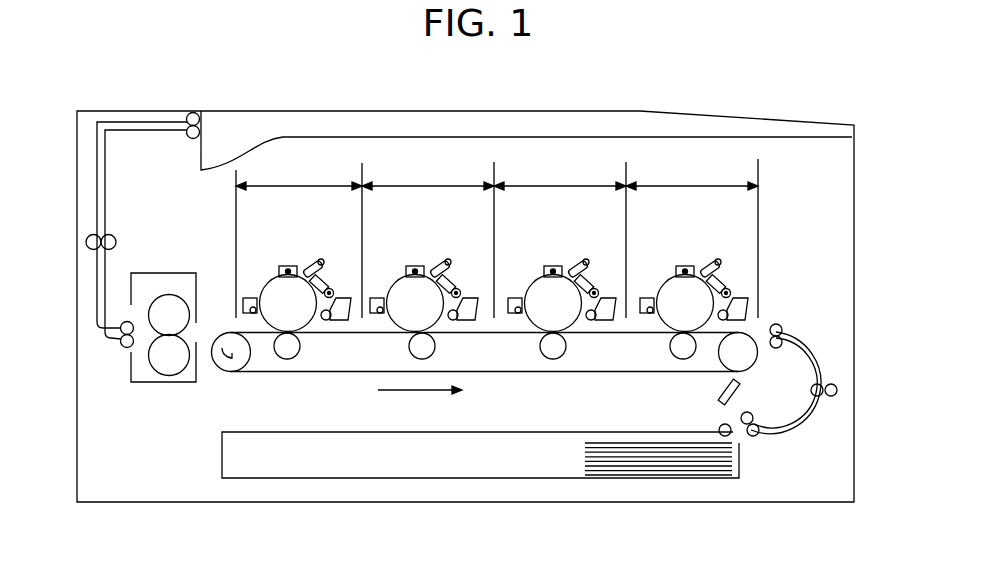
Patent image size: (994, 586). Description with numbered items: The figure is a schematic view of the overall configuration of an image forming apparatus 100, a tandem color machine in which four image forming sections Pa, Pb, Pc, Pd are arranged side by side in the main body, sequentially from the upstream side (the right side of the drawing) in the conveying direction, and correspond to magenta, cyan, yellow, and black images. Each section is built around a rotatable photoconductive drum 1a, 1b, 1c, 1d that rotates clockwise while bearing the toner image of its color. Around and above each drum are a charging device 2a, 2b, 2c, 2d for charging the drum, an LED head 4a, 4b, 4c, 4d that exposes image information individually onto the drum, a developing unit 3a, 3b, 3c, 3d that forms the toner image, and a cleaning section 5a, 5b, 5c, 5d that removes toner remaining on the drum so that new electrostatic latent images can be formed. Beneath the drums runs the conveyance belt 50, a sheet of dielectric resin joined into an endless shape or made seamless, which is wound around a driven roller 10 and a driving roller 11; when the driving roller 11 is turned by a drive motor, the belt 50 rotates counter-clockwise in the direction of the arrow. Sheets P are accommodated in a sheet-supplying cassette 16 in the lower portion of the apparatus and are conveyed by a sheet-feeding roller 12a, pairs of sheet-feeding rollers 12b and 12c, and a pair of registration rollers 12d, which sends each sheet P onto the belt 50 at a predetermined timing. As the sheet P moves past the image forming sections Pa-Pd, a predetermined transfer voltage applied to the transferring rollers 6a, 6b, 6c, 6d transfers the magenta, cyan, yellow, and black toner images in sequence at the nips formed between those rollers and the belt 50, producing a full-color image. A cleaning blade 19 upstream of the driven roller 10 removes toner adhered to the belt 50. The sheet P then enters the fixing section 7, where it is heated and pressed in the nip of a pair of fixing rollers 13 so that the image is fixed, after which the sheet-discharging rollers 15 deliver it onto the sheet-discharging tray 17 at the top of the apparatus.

The image forming apparatus 100 is at (767, 112).
The photoconductive drum 1a is at (685, 303).
The photoconductive drum 1b is at (553, 303).
The photoconductive drum 1c is at (415, 303).
The photoconductive drum 1d is at (288, 303).
The charging device 2a is at (667, 246).
The charging device 2b is at (535, 242).
The charging device 2c is at (402, 244).
The charging device 2d is at (272, 238).
The developing unit 3a is at (756, 282).
The developing unit 3b is at (601, 267).
The developing unit 3c is at (463, 266).
The developing unit 3d is at (336, 266).
The LED head 4a is at (718, 253).
The LED head 4b is at (574, 249).
The LED head 4c is at (439, 249).
The LED head 4d is at (310, 248).
The cleaning section 5a is at (646, 277).
The cleaning section 5b is at (513, 274).
The cleaning section 5c is at (382, 274).
The cleaning section 5d is at (255, 274).
The transferring roller 6a is at (683, 352).
The transferring roller 6b is at (555, 347).
The transferring roller 6c is at (413, 352).
The transferring roller 6d is at (280, 352).
The fixing section 7 is at (152, 270).
The driven roller 10 is at (735, 353).
The driving roller 11 is at (225, 365).
The sheet-feeding roller 12a is at (743, 437).
The pair of sheet-feeding rollers 12b is at (762, 432).
The pair of sheet-feeding rollers 12c is at (837, 390).
The pair of registration rollers 12d is at (782, 327).
The pair of fixing rollers 13 is at (165, 360).
The sheet-discharging rollers 15 is at (207, 125).
The sheet-supplying cassette 16 is at (327, 480).
The sheet-discharging tray 17 is at (310, 132).
The cleaning blade 19 is at (717, 398).
The conveyance belt 50 is at (325, 372).
The sheet P is at (653, 472).
The image forming section Pa is at (692, 172).
The image forming section Pb is at (560, 172).
The image forming section Pc is at (428, 171).
The image forming section Pd is at (299, 171).